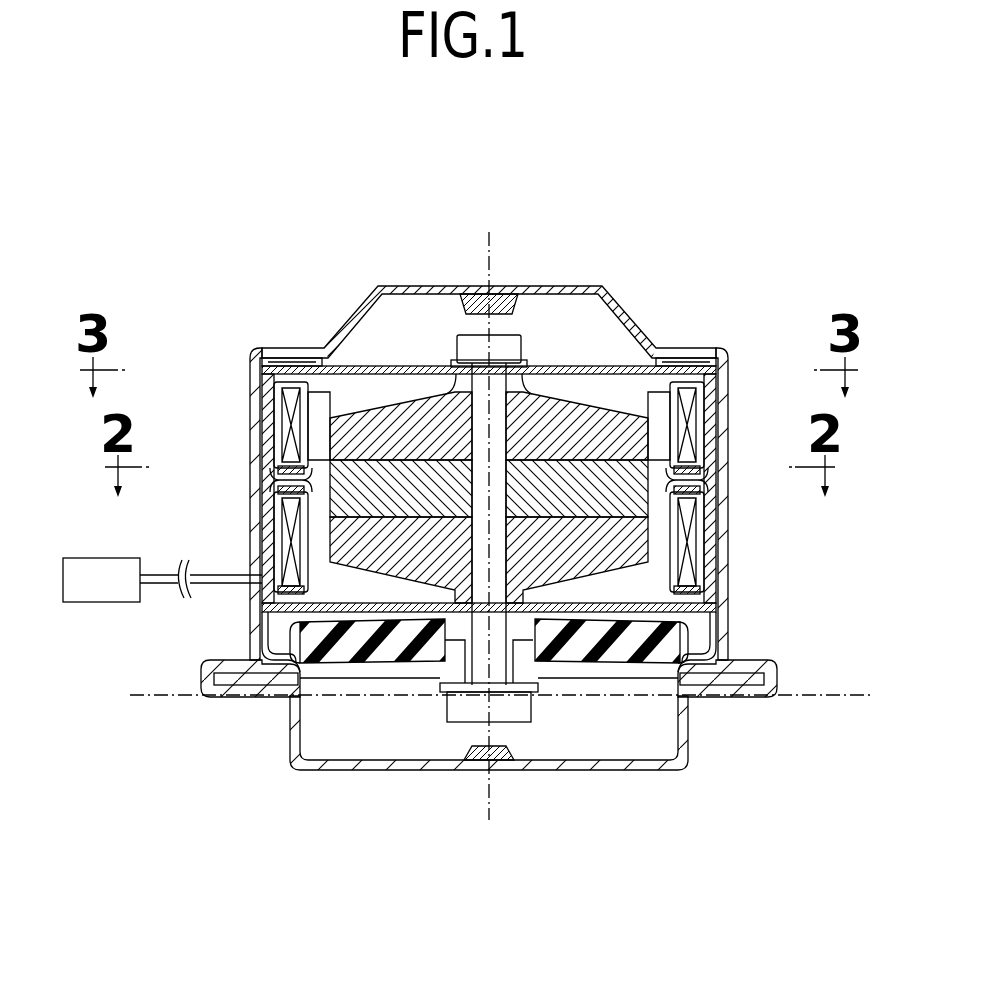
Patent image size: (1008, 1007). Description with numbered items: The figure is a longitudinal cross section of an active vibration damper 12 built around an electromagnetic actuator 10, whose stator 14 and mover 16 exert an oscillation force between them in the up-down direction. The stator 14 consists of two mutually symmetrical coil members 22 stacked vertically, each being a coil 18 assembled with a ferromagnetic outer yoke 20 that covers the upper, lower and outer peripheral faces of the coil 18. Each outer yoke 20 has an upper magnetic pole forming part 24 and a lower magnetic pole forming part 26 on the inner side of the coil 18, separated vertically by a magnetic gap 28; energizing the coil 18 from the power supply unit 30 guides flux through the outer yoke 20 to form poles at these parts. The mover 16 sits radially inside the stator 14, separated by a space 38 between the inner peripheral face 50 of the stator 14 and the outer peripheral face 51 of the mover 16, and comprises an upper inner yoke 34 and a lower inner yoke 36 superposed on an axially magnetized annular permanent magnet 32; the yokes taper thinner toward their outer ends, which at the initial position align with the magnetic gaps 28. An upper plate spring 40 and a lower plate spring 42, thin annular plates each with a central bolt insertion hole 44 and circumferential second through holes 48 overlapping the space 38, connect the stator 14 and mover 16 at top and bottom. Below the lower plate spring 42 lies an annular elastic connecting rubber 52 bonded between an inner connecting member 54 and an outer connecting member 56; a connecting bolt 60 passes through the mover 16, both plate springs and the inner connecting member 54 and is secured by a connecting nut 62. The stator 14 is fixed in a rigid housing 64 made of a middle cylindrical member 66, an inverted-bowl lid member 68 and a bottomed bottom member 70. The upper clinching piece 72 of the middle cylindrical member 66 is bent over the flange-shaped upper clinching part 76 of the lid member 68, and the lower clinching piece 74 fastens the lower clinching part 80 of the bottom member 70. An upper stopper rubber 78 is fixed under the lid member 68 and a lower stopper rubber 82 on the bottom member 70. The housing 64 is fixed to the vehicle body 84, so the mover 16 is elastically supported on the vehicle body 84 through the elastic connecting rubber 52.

The electromagnetic actuator 10 is at (604, 349).
The active vibration damper 12 is at (734, 293).
The stator 14 is at (186, 473).
The mover 16 is at (429, 389).
The coil 18 is at (690, 412).
The outer yoke 20 is at (712, 432).
The coil member 22 is at (483, 491).
The upper magnetic pole forming part 24 is at (672, 414).
The lower magnetic pole forming part 26 is at (672, 454).
The magnetic gap 28 is at (690, 422).
The power supply unit 30 is at (104, 588).
The permanent magnet 32 is at (620, 495).
The upper inner yoke 34 is at (566, 412).
The lower inner yoke 36 is at (571, 548).
The space 38 is at (322, 546).
The upper plate spring 40 is at (387, 366).
The lower plate spring 42 is at (367, 616).
The bolt insertion hole 44 is at (482, 366).
The second through hole 48 is at (316, 366).
The inner peripheral face of the stator 50 is at (322, 452).
The outer peripheral face of the mover 51 is at (326, 418).
The elastic connecting rubber 52 is at (585, 640).
The inner connecting member 54 is at (523, 645).
The outer connecting member 56 is at (683, 645).
The connecting bolt 60 is at (528, 392).
The connecting nut 62 is at (513, 723).
The housing 64 is at (243, 361).
The middle cylindrical member 66 is at (262, 405).
The lid member 68 is at (407, 292).
The bottom member 70 is at (343, 771).
The upper clinching piece 72 is at (264, 361).
The lower clinching piece 74 is at (235, 698).
The upper clinching part 76 is at (280, 366).
The upper stopper rubber 78 is at (488, 302).
The lower clinching part 80 is at (247, 688).
The lower stopper rubber 82 is at (494, 764).
The vehicle body 84 is at (146, 695).